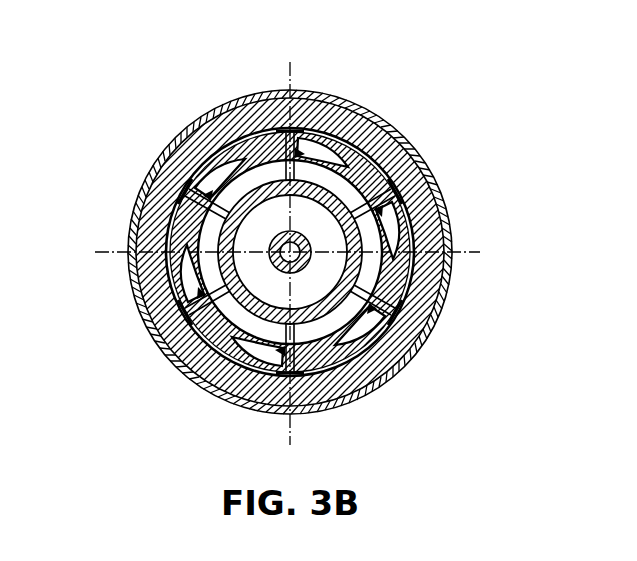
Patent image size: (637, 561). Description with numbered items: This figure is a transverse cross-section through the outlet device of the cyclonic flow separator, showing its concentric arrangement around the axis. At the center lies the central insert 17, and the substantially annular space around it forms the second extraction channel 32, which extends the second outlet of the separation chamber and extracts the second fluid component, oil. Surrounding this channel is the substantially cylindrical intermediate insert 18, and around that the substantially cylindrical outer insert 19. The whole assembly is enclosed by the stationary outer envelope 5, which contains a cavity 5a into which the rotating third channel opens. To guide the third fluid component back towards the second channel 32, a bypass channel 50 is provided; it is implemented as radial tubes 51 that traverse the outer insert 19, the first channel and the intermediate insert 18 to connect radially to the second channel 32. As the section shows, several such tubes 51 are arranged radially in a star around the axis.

The bypass channel 50 is at (323, 97).
The radial tube 51 is at (262, 125).
The outer envelope 5 is at (200, 378).
The outer insert 19 is at (190, 343).
The intermediate insert 18 is at (195, 287).
The central insert 17 is at (225, 264).
The second extraction channel 32 is at (247, 242).
The cavity 5a is at (215, 215).